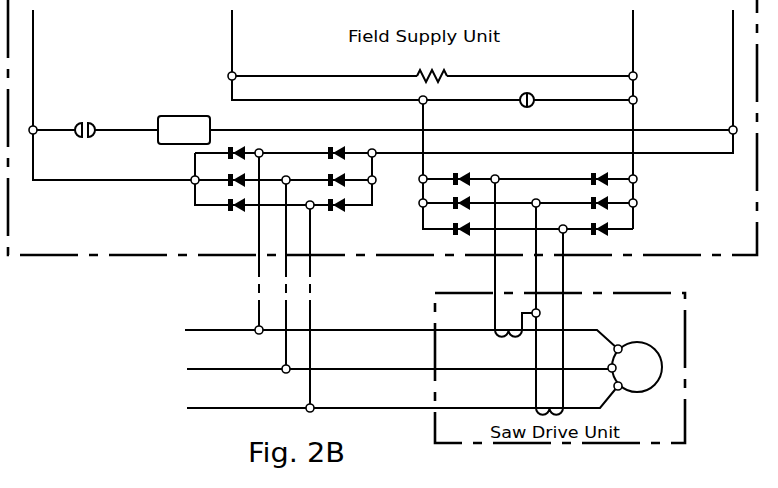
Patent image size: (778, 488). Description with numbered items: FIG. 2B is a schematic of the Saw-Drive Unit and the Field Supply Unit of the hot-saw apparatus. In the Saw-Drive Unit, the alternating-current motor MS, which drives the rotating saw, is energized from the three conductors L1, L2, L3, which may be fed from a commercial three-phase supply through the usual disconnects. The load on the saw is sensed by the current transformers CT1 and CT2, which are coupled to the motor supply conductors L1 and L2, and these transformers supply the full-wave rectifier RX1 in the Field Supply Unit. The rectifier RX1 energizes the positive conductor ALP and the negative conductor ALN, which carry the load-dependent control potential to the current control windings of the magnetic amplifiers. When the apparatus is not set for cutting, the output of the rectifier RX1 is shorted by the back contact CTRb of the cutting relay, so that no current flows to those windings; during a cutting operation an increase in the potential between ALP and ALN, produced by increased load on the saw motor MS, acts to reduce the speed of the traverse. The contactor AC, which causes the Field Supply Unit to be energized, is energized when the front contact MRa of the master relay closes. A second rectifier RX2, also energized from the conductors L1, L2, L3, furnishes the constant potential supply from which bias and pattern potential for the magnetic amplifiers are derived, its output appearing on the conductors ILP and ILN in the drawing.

The inverter line positive conductor ILP is at (34, 44).
The positive conductor ALP is at (233, 40).
The negative conductor ALN is at (632, 42).
The inverter line negative conductor ILN is at (733, 45).
The front contact of master relay MR MRa is at (84, 122).
The contactor AC is at (445, 130).
The back contact of relay CTR CTRb is at (534, 97).
The rectifier RX2 is at (241, 239).
The full-wave rectifier RX1 is at (675, 239).
The conductor L1 is at (230, 329).
The conductor L2 is at (232, 368).
The conductor L3 is at (232, 407).
The current transformer CT1 is at (512, 340).
The current transformer CT2 is at (538, 405).
The alternating-current motor MS is at (634, 343).